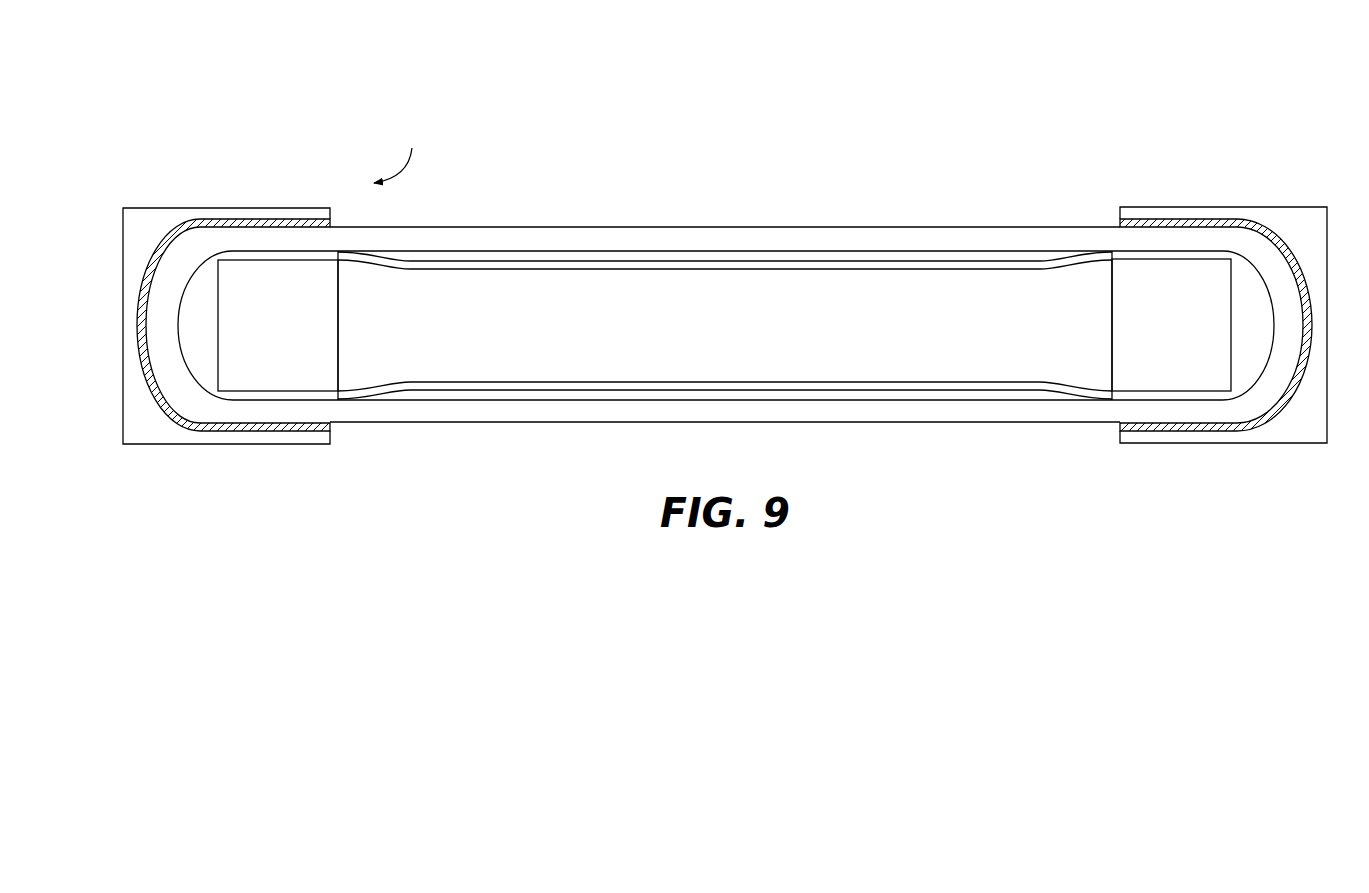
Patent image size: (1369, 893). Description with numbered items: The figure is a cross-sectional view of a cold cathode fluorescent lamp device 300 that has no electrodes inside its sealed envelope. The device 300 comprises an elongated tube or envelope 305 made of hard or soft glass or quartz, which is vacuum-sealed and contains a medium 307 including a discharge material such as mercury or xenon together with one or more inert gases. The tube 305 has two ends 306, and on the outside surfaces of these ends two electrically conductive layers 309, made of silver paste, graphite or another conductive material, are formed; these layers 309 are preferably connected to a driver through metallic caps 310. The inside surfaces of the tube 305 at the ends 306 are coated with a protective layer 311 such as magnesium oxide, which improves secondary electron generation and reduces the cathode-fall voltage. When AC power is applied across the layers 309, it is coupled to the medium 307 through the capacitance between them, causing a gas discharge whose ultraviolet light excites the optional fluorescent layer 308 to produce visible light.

The device 300 is at (228, 147).
The tube or envelope 305 is at (623, 226).
The ends 306 is at (161, 238).
The medium 307 is at (945, 363).
The fluorescent layer 308 is at (758, 262).
The electrically conductive layer 309 is at (297, 222).
The metallic caps 310 is at (162, 446).
The protective layer 311 is at (338, 392).